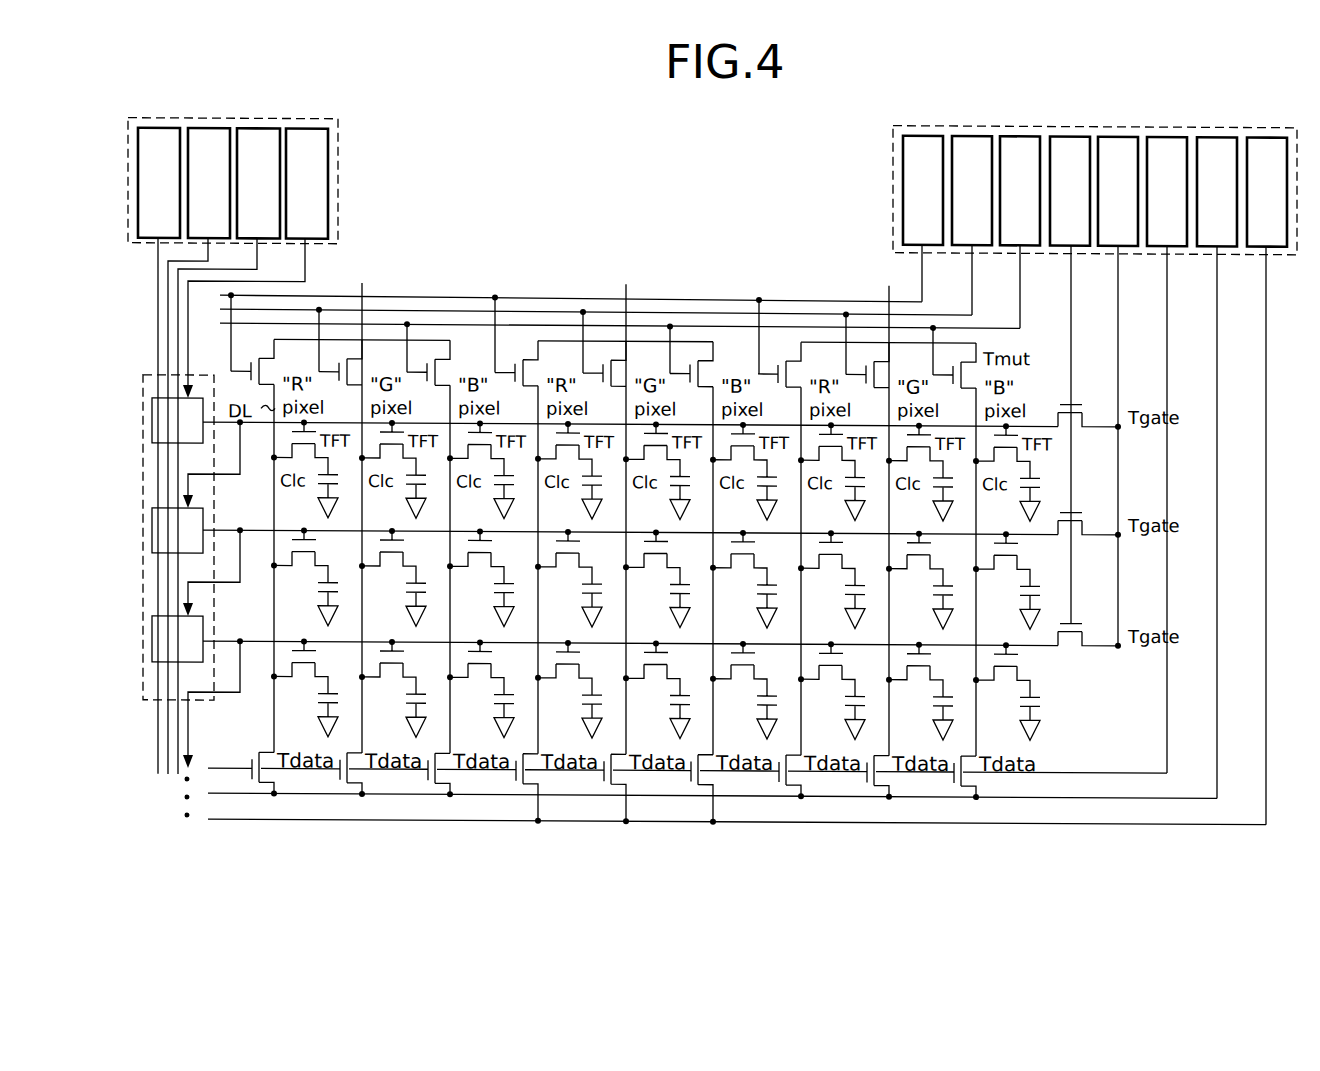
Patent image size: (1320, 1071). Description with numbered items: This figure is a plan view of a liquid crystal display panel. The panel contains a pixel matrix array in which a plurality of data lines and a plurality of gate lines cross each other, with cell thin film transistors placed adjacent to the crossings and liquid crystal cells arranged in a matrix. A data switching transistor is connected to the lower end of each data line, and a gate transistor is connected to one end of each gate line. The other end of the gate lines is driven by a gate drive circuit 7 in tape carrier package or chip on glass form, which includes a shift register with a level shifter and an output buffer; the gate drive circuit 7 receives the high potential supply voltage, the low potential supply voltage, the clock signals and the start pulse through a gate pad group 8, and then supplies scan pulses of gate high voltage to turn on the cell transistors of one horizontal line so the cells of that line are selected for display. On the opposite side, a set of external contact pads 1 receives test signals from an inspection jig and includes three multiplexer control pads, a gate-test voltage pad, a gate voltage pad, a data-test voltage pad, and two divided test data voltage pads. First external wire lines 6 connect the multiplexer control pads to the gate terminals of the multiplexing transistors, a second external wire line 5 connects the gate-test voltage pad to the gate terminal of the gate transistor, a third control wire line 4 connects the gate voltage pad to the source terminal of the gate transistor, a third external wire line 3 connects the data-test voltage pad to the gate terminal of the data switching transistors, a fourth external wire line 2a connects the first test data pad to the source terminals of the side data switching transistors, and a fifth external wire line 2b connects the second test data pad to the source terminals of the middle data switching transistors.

The set of external contact pads 1 is at (893, 160).
The fourth external wire line 2a is at (1217, 276).
The fifth external wire line 2b is at (1266, 276).
The third external wire line 3 is at (1167, 276).
The third control wire line 4 is at (1118, 276).
The second external wire line 5 is at (1071, 276).
The first external wire lines 6 is at (1020, 280).
The gate drive circuit 7 is at (143, 374).
The gate pad group 8 is at (338, 152).